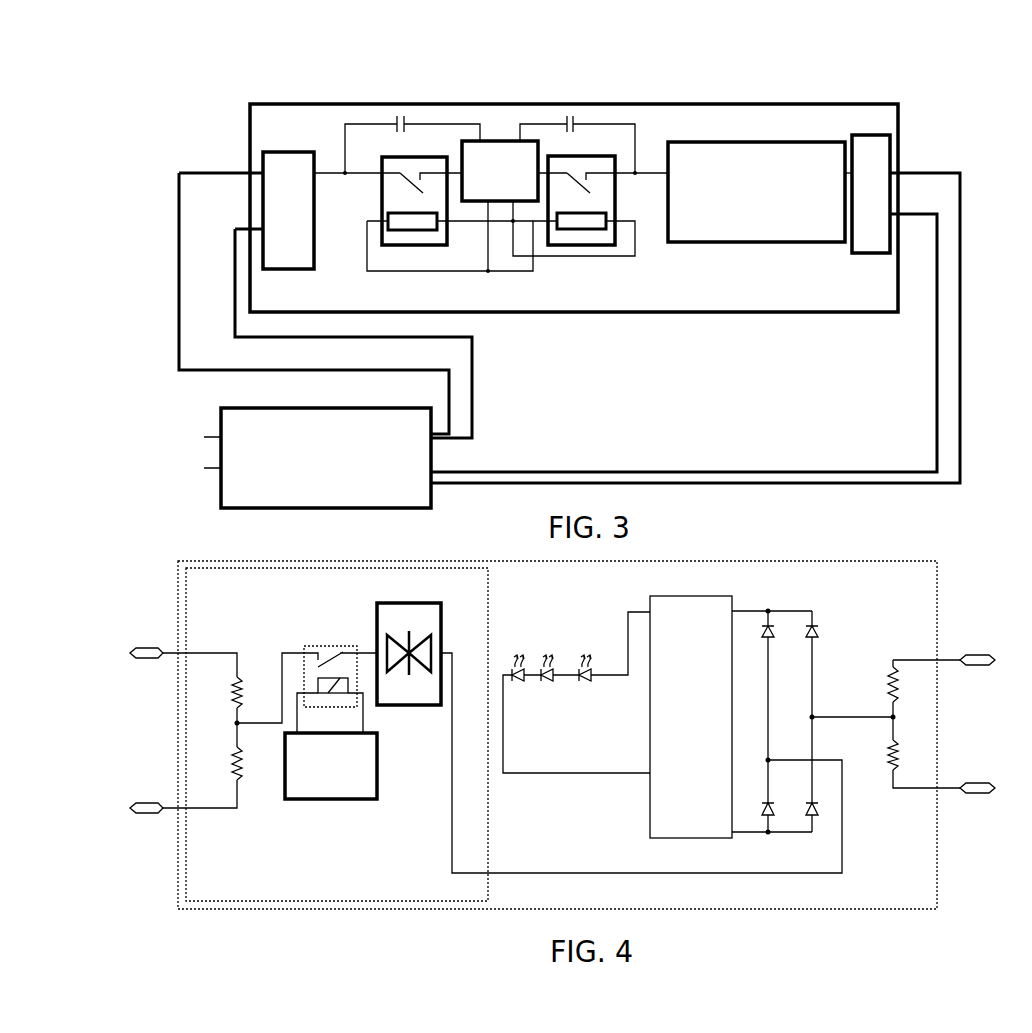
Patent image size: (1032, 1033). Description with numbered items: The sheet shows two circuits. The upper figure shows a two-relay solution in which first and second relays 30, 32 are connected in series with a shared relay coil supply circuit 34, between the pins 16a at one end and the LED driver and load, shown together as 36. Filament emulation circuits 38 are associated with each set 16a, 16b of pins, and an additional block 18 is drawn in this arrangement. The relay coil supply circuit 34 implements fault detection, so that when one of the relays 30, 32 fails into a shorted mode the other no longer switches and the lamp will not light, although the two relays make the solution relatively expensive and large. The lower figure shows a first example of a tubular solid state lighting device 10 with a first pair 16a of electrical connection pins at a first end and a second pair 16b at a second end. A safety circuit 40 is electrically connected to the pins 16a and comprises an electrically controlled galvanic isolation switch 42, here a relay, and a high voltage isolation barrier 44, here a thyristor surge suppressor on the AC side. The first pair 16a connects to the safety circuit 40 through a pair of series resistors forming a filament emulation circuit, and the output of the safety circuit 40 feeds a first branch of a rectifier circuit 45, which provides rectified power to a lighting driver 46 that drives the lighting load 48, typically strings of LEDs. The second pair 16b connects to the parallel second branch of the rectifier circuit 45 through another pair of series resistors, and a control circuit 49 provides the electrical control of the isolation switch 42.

In FIG. 4, the tubular solid state lighting device 10 is at (178, 842).
In FIG. 3, the first pair of electrical connection pins 16a is at (235, 152).
In FIG. 4, the first pair of electrical connection pins 16a is at (172, 640).
In FIG. 3, the second pair of electrical connection pins 16b is at (908, 152).
In FIG. 4, the second pair of electrical connection pins 16b is at (958, 638).
In FIG. 3, the power supply unit 18 is at (215, 425).
In FIG. 3, the first relay 30 is at (382, 198).
In FIG. 3, the second relay 32 is at (612, 198).
In FIG. 3, the relay coil supply circuit 34 is at (493, 141).
In FIG. 3, the LED driver and load 36 is at (737, 142).
In FIG. 3, the filament emulation circuit 38 is at (287, 152).
In FIG. 4, the safety circuit 40 is at (355, 626).
In FIG. 4, the electrically controlled galvanic isolation switch 42 is at (315, 646).
In FIG. 4, the high voltage isolation barrier 44 is at (420, 705).
In FIG. 4, the rectifier circuit 45 is at (840, 641).
In FIG. 4, the lighting driver 46 is at (713, 596).
In FIG. 4, the lighting load 48 is at (565, 692).
In FIG. 4, the control circuit 49 is at (340, 796).